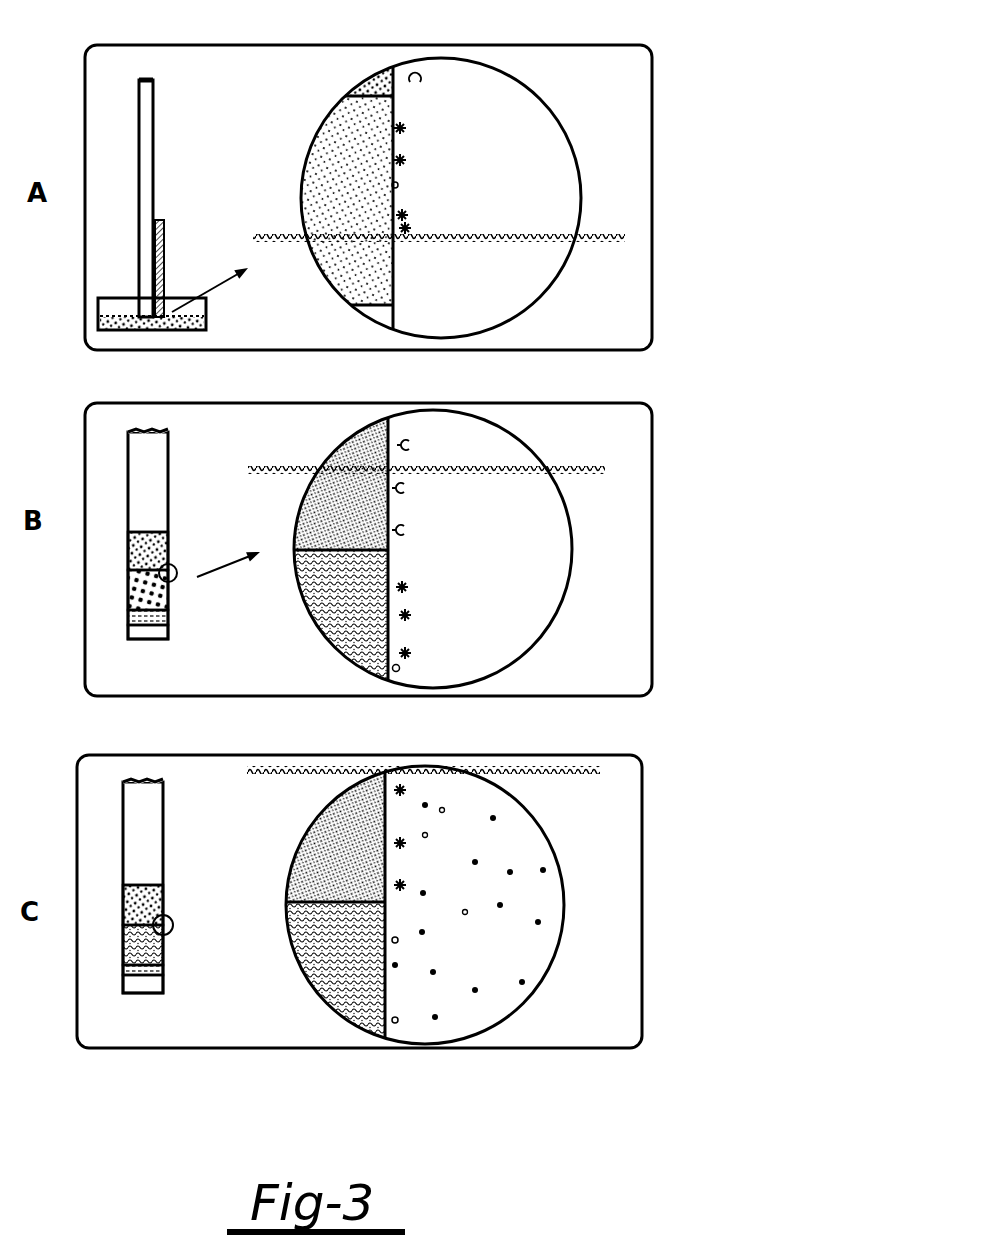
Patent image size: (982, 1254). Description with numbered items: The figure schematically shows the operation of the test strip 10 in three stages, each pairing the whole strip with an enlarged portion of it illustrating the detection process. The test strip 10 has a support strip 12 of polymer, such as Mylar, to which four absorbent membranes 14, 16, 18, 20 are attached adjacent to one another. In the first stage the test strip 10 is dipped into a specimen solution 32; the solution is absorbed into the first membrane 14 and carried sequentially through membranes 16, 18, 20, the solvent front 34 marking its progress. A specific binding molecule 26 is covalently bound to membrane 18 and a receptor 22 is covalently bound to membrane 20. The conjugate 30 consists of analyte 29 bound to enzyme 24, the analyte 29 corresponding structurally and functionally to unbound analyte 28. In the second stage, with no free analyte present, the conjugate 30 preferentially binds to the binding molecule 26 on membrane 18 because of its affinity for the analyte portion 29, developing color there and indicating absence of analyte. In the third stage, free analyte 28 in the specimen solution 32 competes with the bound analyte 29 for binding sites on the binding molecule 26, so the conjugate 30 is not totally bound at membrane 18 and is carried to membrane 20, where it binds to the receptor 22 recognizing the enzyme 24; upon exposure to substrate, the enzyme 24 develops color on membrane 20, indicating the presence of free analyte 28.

The test strip 10 is at (129, 185).
The support strip 12 is at (153, 120).
The first membrane 14 is at (178, 320).
The absorbent membrane 16 is at (164, 300).
The absorbent membrane 18 is at (163, 275).
The absorbent membrane 20 is at (165, 236).
The second binding means or receptor 22 is at (408, 445).
The enzyme 24 is at (417, 653).
The specific binding molecule 26 is at (417, 80).
The analyte 28 is at (475, 990).
The analyte 29 is at (398, 672).
The conjugate 30 is at (418, 128).
The specimen solution 32 is at (120, 316).
The solvent front 34 is at (593, 240).